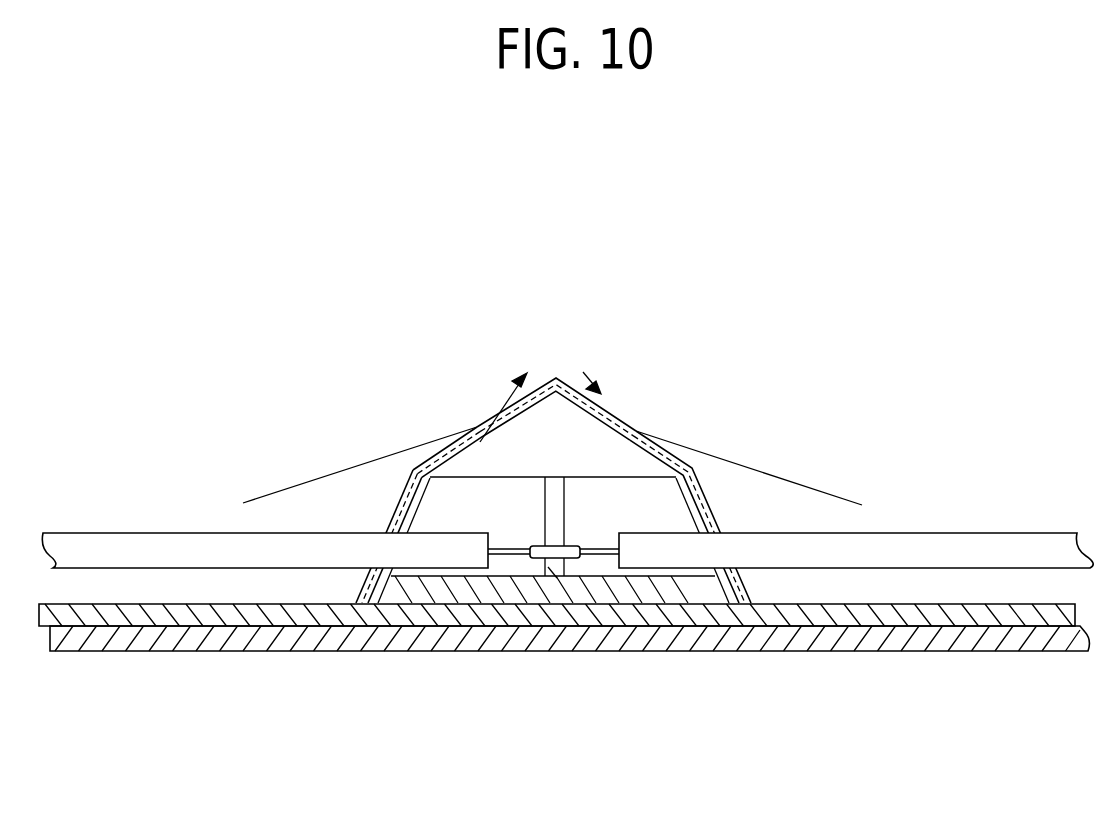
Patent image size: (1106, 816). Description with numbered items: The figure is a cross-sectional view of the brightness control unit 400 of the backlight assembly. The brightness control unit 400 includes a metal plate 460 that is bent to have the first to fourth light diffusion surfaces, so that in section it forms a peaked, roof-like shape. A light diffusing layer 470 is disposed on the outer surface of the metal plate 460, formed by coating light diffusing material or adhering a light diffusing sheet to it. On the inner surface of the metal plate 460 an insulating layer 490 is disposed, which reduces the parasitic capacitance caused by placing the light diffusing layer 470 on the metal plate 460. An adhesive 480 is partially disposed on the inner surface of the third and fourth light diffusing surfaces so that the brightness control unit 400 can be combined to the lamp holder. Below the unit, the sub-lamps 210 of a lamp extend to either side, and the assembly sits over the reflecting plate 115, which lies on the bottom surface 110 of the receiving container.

The brightness control unit 400 is at (552, 460).
The metal plate 460 is at (613, 407).
The light diffusing layer 470 is at (680, 462).
The adhesive 480 is at (413, 470).
The insulating layer 490 is at (398, 507).
The sub-lamp 210 is at (946, 535).
The reflecting plate 115 is at (868, 618).
The bottom surface 110 is at (1018, 640).